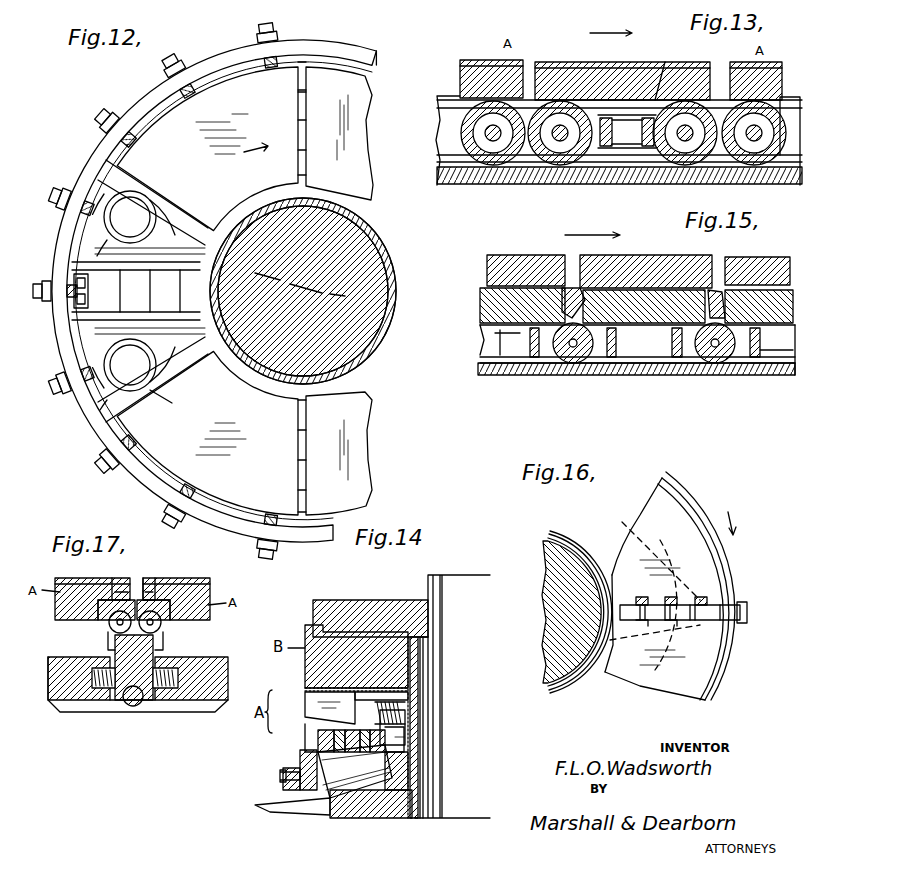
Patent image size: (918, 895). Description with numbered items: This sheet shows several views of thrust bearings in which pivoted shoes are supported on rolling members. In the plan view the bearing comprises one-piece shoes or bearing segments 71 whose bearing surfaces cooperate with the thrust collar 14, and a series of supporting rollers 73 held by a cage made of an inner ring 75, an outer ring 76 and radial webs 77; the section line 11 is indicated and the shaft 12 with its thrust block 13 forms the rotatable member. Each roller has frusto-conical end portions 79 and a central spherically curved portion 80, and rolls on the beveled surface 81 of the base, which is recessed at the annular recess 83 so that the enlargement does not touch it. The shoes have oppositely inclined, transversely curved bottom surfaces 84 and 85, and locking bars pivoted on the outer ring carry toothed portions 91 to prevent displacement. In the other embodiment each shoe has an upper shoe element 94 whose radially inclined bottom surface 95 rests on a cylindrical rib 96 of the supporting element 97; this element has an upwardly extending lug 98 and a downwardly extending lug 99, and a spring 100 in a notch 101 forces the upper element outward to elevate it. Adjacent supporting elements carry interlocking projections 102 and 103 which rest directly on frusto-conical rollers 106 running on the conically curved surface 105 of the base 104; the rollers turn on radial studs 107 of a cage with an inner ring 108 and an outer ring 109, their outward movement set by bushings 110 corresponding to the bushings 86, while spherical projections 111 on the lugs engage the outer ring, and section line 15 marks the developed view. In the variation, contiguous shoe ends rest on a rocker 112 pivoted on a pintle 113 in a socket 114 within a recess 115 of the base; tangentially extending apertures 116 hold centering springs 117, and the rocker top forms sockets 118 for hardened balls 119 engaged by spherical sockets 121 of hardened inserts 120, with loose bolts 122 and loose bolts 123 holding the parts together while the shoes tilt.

In FIG. 12, the section line 11 is at (45, 195).
In FIG. 12, the shaft 12 is at (350, 246).
In FIG. 14, the shaft 12 is at (462, 750).
In FIG. 16, the shaft 12 is at (550, 548).
In FIG. 12, the thrust block 13 is at (158, 169).
In FIG. 14, the thrust block 13 is at (375, 590).
In FIG. 14, the thrust collar 14 is at (305, 625).
In FIG. 16, the section line 15 is at (640, 480).
In FIG. 12, the bearing segments 71 is at (245, 291).
In FIG. 13, the bearing segments 71 is at (480, 78).
In FIG. 17, the bearing segments 71 is at (75, 582).
In FIG. 12, the supporting rollers 73 is at (95, 243).
In FIG. 13, the supporting rollers 73 is at (560, 165).
In FIG. 12, the inner ring 75 is at (200, 232).
In FIG. 12, the outer ring 76 is at (108, 135).
In FIG. 12, the radial webs 77 is at (136, 291).
In FIG. 13, the radial webs 77 is at (648, 150).
In FIG. 12, the end portions 79 is at (178, 372).
In FIG. 12, the spherically curved portion 80 is at (135, 217).
In FIG. 12, the beveled surface 81 is at (108, 413).
In FIG. 12, the annular recess 83 is at (138, 215).
In FIG. 13, the bottom surface 84 is at (605, 85).
In FIG. 13, the bottom surface 85 is at (665, 90).
In FIG. 12, the bushings 86 is at (72, 378).
In FIG. 12, the toothed portions 91 is at (73, 287).
In FIG. 15, the upper shoe element 94 is at (497, 260).
In FIG. 14, the upper shoe element 94 is at (413, 680).
In FIG. 16, the upper shoe element 94 is at (670, 500).
In FIG. 14, the radially inclined bottom surface 95 is at (305, 692).
In FIG. 14, the cylindrical rib 96 is at (305, 727).
In FIG. 15, the supporting element 97 is at (655, 320).
In FIG. 14, the supporting element 97 is at (405, 734).
In FIG. 14, the upwardly extending lug 98 is at (405, 710).
In FIG. 14, the downwardly extending lug 99 is at (318, 742).
In FIG. 16, the downwardly extending lug 99 is at (700, 640).
In FIG. 14, the spring 100 is at (410, 690).
In FIG. 14, the notch 101 is at (420, 670).
In FIG. 15, the interlocking projection 102 is at (585, 260).
In FIG. 14, the interlocking projection 102 is at (370, 692).
In FIG. 16, the interlocking projection 102 is at (690, 597).
In FIG. 15, the interlocking projection 103 is at (568, 262).
In FIG. 14, the interlocking projection 103 is at (355, 771).
In FIG. 16, the interlocking projection 103 is at (640, 640).
In FIG. 15, the base 104 is at (720, 360).
In FIG. 14, the base 104 is at (352, 808).
In FIG. 15, the conically curved surface 105 is at (775, 358).
In FIG. 14, the conically curved surface 105 is at (380, 805).
In FIG. 15, the frusto-conical rollers 106 is at (573, 360).
In FIG. 14, the frusto-conical rollers 106 is at (400, 800).
In FIG. 14, the radial studs 107 is at (290, 775).
In FIG. 14, the inner ring 108 is at (420, 770).
In FIG. 16, the inner ring 108 is at (588, 550).
In FIG. 14, the outer ring 109 is at (290, 806).
In FIG. 14, the bushings 110 is at (283, 778).
In FIG. 14, the spherical projections 111 is at (300, 770).
In FIG. 17, the rocker 112 is at (153, 658).
In FIG. 17, the pintle 113 is at (140, 705).
In FIG. 17, the socket 114 is at (100, 712).
In FIG. 17, the recess 115 is at (170, 700).
In FIG. 17, the tangentially extending apertures 116 is at (180, 660).
In FIG. 17, the centering springs 117 is at (92, 680).
In FIG. 17, the sockets 118 is at (108, 643).
In FIG. 17, the hardened balls 119 is at (109, 626).
In FIG. 17, the hardened inserts 120 is at (98, 612).
In FIG. 17, the spherical sockets 121 is at (210, 590).
In FIG. 17, the loose bolts 122 is at (65, 660).
In FIG. 17, the loose bolts 123 is at (125, 578).